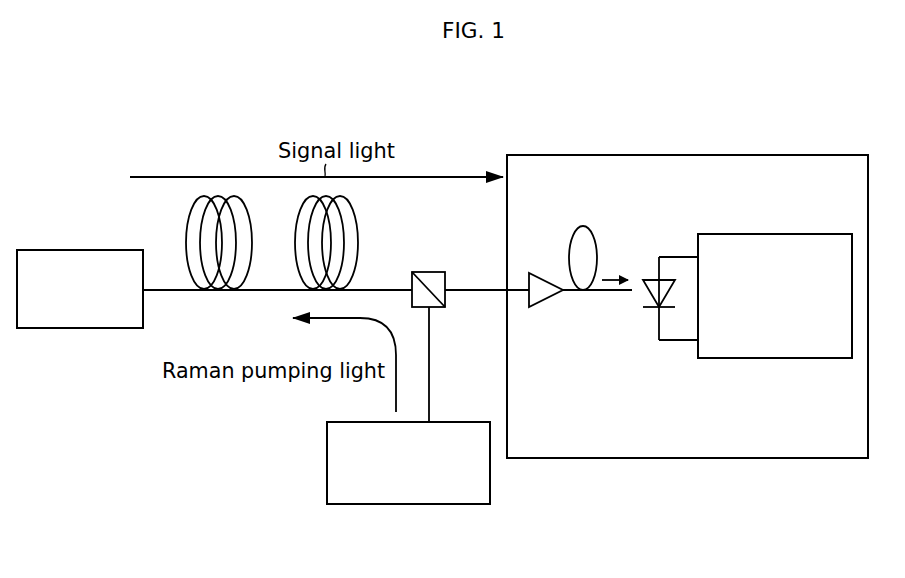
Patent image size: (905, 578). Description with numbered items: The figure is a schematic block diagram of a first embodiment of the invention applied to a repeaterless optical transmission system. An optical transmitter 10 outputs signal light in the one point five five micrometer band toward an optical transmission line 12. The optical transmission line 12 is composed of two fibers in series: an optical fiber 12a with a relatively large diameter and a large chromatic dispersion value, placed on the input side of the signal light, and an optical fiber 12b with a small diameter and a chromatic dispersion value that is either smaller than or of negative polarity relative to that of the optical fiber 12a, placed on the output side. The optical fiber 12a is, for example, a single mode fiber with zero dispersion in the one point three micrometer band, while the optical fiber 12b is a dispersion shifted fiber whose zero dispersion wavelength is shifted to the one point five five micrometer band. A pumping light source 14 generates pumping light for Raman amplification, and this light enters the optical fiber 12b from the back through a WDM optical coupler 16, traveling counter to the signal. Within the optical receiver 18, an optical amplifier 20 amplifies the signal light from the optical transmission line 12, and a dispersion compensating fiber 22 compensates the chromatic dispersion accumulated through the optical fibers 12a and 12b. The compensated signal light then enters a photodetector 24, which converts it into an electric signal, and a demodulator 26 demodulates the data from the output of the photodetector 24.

The optical transmitter 10 is at (95, 251).
The optical transmission line 12 is at (276, 241).
The optical fiber 12a is at (217, 228).
The optical fiber 12b is at (327, 232).
The pumping light source 14 is at (420, 504).
The WDM optical coupler 16 is at (441, 278).
The optical receiver 18 is at (856, 187).
The optical amplifier 20 is at (534, 302).
The dispersion compensating fiber 22 is at (587, 238).
The photodetector 24 is at (636, 303).
The demodulator 26 is at (741, 348).